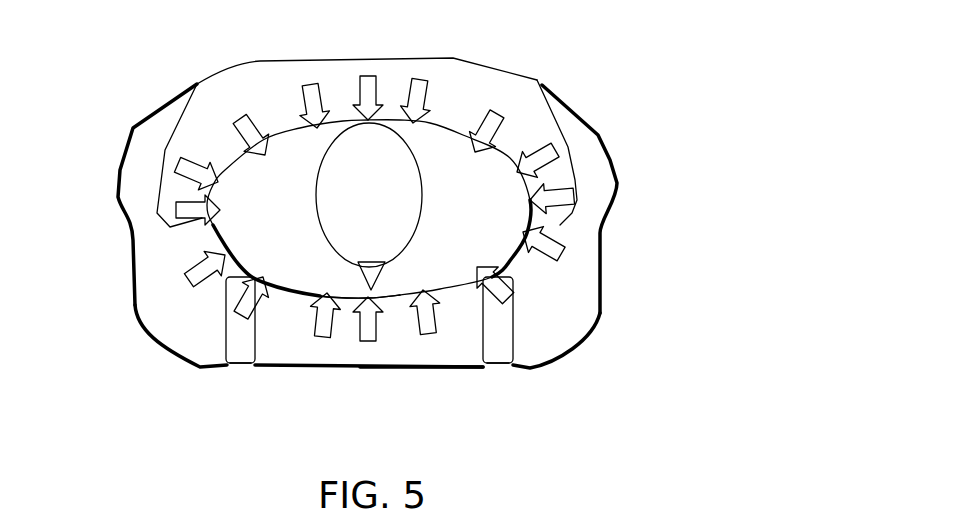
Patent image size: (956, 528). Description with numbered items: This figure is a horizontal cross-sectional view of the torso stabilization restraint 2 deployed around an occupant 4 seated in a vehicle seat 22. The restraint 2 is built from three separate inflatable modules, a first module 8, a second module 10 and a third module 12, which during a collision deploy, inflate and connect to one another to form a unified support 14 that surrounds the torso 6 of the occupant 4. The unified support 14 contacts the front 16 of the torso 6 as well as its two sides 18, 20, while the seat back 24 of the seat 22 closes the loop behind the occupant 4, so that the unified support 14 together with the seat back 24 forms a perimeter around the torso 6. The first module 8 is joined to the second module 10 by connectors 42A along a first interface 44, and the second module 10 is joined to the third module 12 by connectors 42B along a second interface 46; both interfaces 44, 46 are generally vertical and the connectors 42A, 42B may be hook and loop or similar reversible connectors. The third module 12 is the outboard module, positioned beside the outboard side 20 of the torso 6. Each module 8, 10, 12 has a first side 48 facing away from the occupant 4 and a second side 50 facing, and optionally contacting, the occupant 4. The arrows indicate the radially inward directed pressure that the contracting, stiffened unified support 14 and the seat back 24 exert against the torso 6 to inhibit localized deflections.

The torso stabilization restraint 2 is at (563, 70).
The occupant 4 is at (368, 147).
The torso 6 is at (467, 167).
The first module 8 is at (140, 321).
The second module 10 is at (343, 350).
The third module 12 is at (580, 305).
The unified support 14 is at (618, 282).
The front 16 is at (303, 298).
The side 18 is at (212, 233).
The side 20 is at (535, 222).
The vehicle seat 22 is at (265, 78).
The seat back 24 is at (579, 199).
The connectors 42A is at (227, 343).
The connectors 42B is at (508, 343).
The first interface 44 is at (247, 372).
The second interface 46 is at (498, 377).
The first side 48 is at (382, 375).
The second side 50 is at (410, 290).